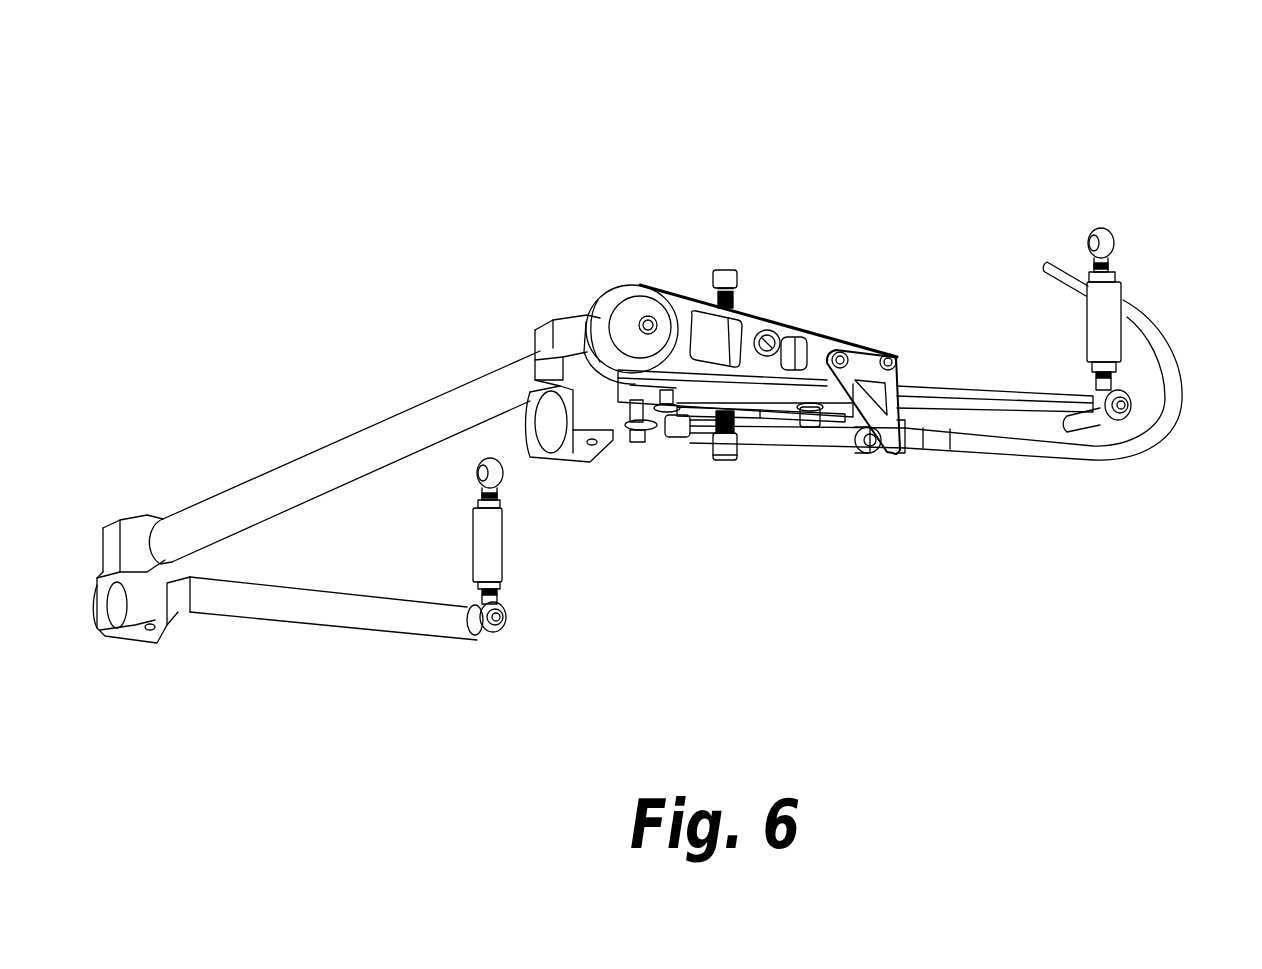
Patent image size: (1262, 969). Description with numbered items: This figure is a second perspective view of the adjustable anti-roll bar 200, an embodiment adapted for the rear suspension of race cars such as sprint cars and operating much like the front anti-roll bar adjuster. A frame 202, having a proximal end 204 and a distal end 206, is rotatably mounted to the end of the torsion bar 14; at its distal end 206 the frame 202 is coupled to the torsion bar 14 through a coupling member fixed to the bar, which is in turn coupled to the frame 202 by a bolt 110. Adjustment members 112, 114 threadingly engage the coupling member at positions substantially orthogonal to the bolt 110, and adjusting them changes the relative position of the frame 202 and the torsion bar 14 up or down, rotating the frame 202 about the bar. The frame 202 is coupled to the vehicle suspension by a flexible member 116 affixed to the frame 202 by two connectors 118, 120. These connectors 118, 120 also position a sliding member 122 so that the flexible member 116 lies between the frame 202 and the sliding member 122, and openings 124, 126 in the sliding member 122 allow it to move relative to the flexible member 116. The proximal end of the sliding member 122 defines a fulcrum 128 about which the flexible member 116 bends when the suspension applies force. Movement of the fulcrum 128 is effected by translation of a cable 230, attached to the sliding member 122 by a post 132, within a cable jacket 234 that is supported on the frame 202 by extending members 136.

The adjustable anti-roll bar 200 is at (479, 118).
The torsion bar 14 is at (390, 420).
The bolt 110 is at (765, 335).
The adjustment member 112 is at (720, 267).
The adjustment member 114 is at (727, 462).
The flexible member 116 is at (1037, 395).
The connector 118 is at (666, 436).
The connector 120 is at (813, 427).
The sliding member 122 is at (782, 410).
The opening 124 is at (750, 412).
The opening 126 is at (845, 433).
The fulcrum 128 is at (935, 397).
The post 132 is at (628, 438).
The extending member 136 is at (895, 430).
The frame 202 is at (827, 350).
The proximal end 204 is at (920, 338).
The distal end 206 is at (558, 291).
The cable 230 is at (705, 431).
The cable jacket 234 is at (1120, 450).